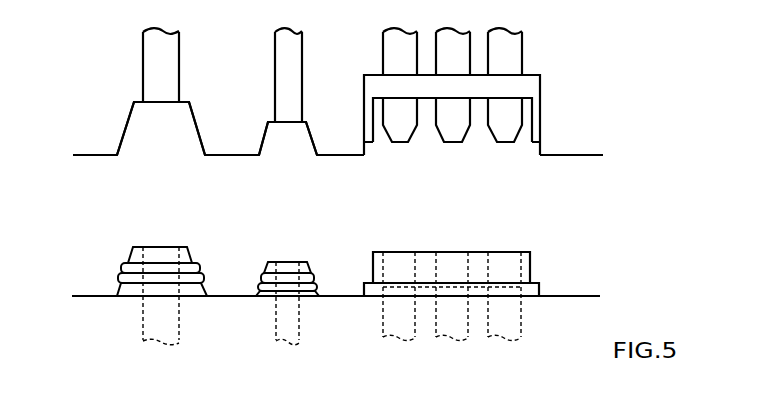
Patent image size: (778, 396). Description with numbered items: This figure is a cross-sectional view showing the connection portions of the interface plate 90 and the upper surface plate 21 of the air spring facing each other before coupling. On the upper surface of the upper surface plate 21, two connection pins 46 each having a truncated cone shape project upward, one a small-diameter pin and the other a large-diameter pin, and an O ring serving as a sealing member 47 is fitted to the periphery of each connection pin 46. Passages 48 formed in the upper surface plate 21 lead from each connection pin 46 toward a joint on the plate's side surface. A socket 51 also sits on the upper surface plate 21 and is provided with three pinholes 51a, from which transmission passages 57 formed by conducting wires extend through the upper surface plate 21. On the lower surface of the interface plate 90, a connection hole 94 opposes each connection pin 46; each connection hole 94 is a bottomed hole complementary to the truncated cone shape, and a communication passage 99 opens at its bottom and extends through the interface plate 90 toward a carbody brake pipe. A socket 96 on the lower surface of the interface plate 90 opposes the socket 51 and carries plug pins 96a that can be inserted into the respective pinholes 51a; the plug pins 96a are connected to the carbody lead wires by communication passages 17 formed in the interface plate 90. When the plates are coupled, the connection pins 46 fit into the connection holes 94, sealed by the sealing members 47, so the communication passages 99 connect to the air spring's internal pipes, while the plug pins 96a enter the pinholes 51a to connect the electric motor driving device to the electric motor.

The communication passage 17 is at (383, 62).
The upper surface plate 21 is at (578, 296).
The connection pin 46 is at (192, 259).
The sealing member 47 is at (125, 265).
The passage 48 is at (153, 311).
The socket 51 is at (530, 258).
The pinhole 51a is at (383, 262).
The transmission passage 57 is at (383, 315).
The interface plate 90 is at (578, 155).
The connection hole 94 is at (124, 138).
The socket 96 is at (378, 142).
The plug pin 96a is at (400, 143).
The communication passage 99 is at (143, 48).